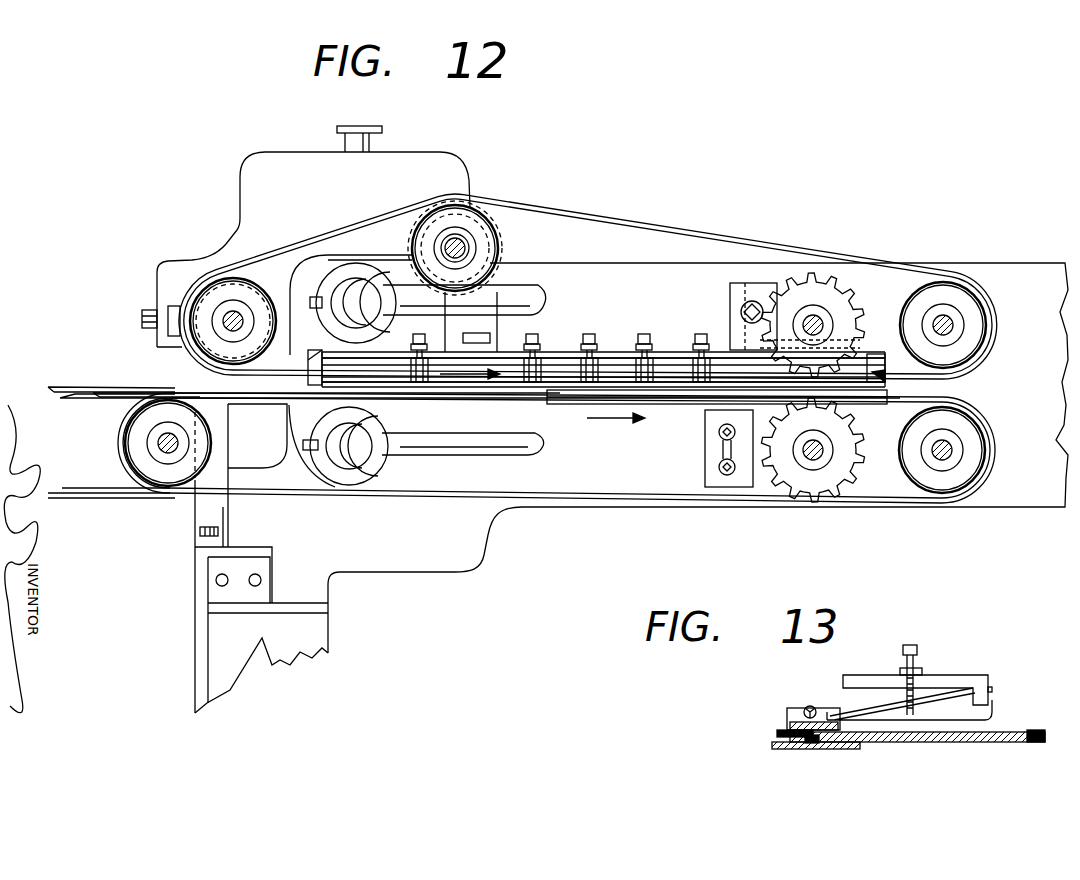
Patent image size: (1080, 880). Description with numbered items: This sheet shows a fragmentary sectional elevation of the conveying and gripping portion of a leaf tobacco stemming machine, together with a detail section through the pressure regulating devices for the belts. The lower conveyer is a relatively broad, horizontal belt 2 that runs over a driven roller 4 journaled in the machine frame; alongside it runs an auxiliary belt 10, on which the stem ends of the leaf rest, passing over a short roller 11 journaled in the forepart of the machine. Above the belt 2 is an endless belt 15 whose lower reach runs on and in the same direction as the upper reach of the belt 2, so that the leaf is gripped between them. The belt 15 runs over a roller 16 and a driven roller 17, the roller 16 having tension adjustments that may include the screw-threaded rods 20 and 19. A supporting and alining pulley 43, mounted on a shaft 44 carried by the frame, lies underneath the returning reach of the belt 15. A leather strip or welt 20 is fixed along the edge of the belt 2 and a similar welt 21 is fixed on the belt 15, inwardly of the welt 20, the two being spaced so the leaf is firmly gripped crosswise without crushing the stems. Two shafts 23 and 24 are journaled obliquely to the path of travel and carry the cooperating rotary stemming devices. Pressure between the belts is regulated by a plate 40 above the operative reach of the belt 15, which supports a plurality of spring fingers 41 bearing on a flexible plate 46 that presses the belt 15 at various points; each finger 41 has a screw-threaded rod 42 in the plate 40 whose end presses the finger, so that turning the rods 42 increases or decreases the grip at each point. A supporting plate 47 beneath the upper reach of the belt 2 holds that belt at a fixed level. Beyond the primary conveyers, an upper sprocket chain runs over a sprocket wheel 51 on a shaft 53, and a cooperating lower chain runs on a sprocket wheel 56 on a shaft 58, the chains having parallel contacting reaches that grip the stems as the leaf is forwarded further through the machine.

In FIG. 12, the belt 2 is at (72, 398).
In FIG. 13, the belt 2 is at (917, 742).
In FIG. 12, the roller 4 is at (972, 458).
In FIG. 12, the auxiliary belt 10 is at (116, 396).
In FIG. 12, the short roller 11 is at (160, 470).
In FIG. 12, the endless belt 15 is at (270, 374).
In FIG. 13, the endless belt 15 is at (838, 727).
In FIG. 12, the roller 16 is at (253, 297).
In FIG. 12, the roller 17 is at (975, 325).
In FIG. 12, the screw-threaded rod 19 is at (142, 315).
In FIG. 12, the strip or welt 20 is at (84, 386).
In FIG. 13, the strip or welt 20 is at (777, 729).
In FIG. 12, the strip or welt 21 is at (240, 262).
In FIG. 13, the strip or welt 21 is at (810, 743).
In FIG. 12, the shaft 23 is at (527, 285).
In FIG. 12, the shaft 24 is at (480, 440).
In FIG. 12, the plate 40 is at (498, 356).
In FIG. 13, the plate 40 is at (853, 675).
In FIG. 12, the spring fingers 41 is at (543, 370).
In FIG. 13, the spring fingers 41 is at (957, 717).
In FIG. 12, the rod or finger 42 is at (413, 341).
In FIG. 13, the rod or finger 42 is at (917, 648).
In FIG. 12, the supporting and alining pulley 43 is at (500, 247).
In FIG. 12, the shaft 44 is at (465, 245).
In FIG. 13, the flexible plate 46 is at (790, 722).
In FIG. 13, the supporting plate 47 is at (780, 748).
In FIG. 12, the sprocket wheel 51 is at (818, 292).
In FIG. 12, the shaft 53 is at (818, 317).
In FIG. 12, the sprocket wheel 56 is at (838, 473).
In FIG. 12, the shaft 58 is at (813, 440).